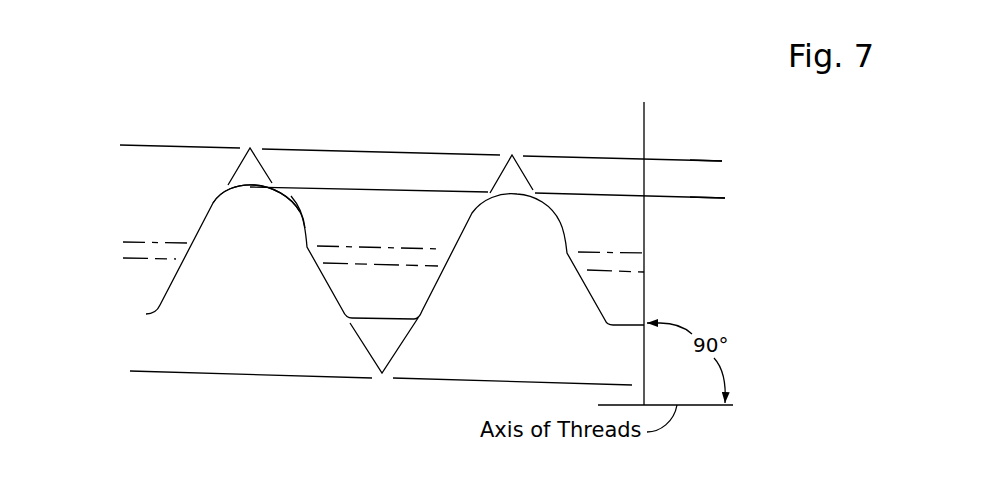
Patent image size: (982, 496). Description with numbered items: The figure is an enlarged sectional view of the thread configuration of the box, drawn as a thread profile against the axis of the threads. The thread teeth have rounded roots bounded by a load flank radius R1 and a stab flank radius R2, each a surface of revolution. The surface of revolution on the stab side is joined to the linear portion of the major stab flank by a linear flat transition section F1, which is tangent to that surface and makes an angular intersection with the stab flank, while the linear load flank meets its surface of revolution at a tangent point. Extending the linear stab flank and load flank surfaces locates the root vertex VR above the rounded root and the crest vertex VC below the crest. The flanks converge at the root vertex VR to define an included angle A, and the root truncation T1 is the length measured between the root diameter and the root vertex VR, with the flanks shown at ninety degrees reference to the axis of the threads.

The linear flat transition section F1 is at (307, 223).
The load flank radius R1 is at (238, 192).
The stab flank radius R2 is at (292, 207).
The root vertex VR is at (512, 155).
The crest vertex VC is at (382, 373).
The root truncation T1 is at (707, 123).
The included angle A is at (593, 303).